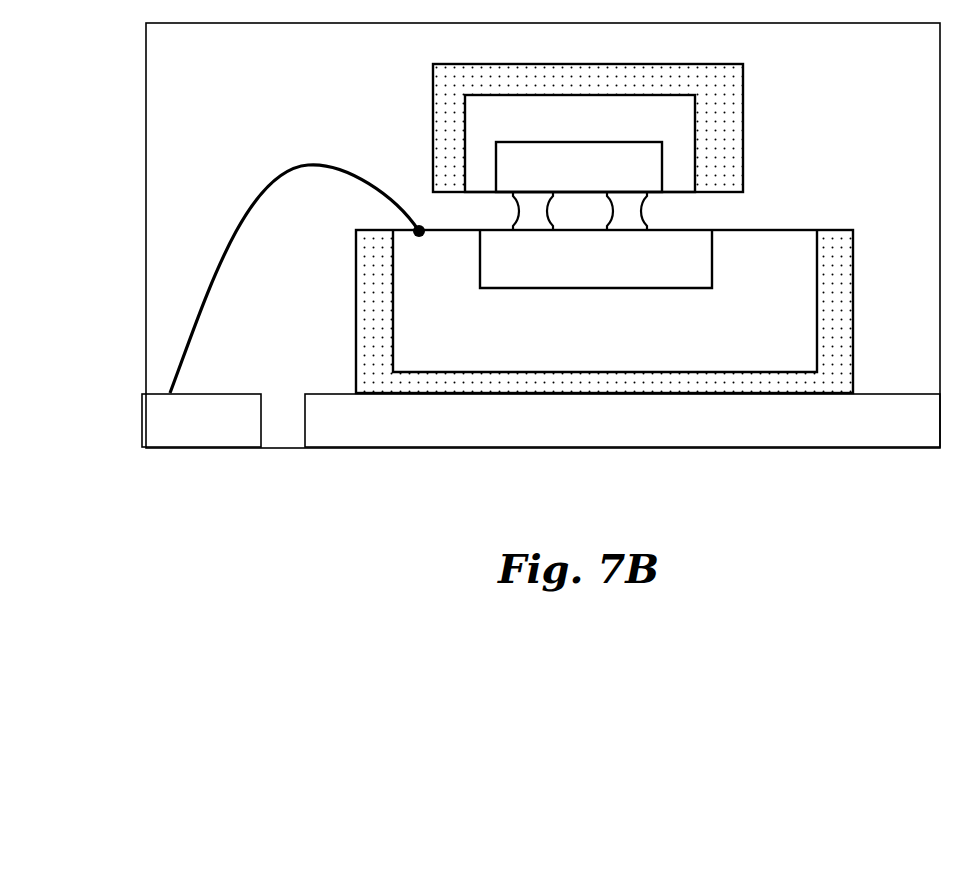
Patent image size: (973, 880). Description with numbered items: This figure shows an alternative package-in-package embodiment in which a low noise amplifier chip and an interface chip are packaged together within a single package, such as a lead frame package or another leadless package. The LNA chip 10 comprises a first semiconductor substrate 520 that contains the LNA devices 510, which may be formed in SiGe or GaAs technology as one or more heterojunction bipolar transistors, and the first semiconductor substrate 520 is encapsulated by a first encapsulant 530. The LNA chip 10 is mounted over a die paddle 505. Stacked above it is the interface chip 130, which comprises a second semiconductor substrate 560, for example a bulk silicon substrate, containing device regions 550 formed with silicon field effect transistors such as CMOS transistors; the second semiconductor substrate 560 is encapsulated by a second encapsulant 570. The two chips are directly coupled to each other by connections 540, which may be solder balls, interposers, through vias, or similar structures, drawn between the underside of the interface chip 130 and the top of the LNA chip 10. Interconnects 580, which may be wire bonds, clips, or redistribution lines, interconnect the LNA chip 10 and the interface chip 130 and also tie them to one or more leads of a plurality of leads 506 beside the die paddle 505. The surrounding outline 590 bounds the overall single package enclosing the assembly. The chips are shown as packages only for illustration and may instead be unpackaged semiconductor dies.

The LNA chip 10 is at (611, 292).
The interface chip 130 is at (552, 113).
The die paddle 505 is at (602, 436).
The leads 506 is at (167, 426).
The LNA devices 510 is at (587, 278).
The first semiconductor substrate 520 is at (587, 348).
The first encapsulant 530 is at (855, 322).
The connections 540 is at (648, 209).
The device regions 550 is at (560, 180).
The second semiconductor substrate 560 is at (560, 126).
The second encapsulant 570 is at (565, 88).
The interconnects 580 is at (199, 336).
The molding compound 590 is at (803, 108).